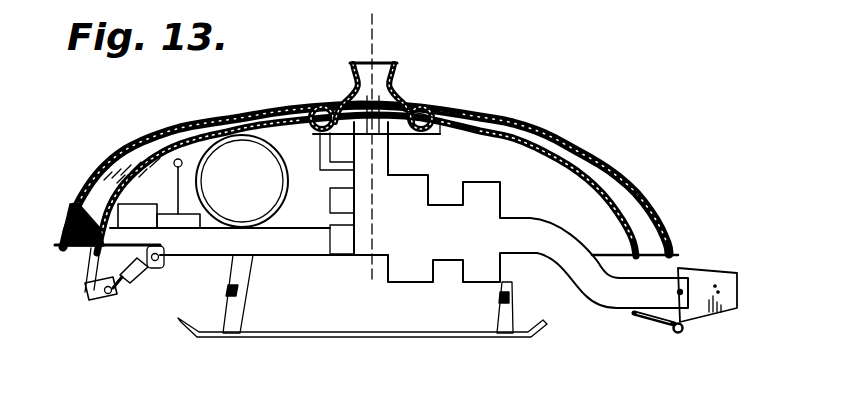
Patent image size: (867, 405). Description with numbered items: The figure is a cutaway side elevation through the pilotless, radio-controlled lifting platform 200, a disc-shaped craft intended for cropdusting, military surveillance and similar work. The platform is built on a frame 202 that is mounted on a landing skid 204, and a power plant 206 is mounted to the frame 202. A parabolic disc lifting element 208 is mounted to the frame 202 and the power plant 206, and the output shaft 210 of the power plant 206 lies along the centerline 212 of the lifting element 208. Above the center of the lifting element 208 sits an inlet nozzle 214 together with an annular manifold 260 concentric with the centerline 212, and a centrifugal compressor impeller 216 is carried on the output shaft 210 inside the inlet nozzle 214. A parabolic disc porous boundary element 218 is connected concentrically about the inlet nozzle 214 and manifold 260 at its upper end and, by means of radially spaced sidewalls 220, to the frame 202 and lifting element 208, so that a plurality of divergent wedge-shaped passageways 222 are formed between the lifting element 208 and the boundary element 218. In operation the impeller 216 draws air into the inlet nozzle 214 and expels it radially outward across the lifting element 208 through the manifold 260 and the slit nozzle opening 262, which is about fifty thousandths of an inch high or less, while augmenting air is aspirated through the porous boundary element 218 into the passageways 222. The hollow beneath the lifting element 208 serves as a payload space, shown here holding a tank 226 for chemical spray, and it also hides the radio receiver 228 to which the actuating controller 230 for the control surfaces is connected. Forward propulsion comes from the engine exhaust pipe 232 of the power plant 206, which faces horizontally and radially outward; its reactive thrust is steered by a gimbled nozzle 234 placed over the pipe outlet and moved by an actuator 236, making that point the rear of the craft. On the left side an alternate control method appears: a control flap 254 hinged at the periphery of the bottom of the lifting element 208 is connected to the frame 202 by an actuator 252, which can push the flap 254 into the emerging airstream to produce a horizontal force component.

The lifting platform 200 is at (385, 196).
The frame 202 is at (307, 240).
The landing skid 204 is at (323, 340).
The power plant 206 is at (417, 188).
The parabolic disc lifting element 208 is at (271, 111).
The output shaft 210 is at (391, 134).
The centerline 212 is at (374, 41).
The inlet nozzle 214 is at (356, 85).
The centrifugal compressor impeller 216 is at (407, 102).
The parabolic disc porous boundary element 218 is at (190, 126).
The sidewalls 220 is at (76, 213).
The divergent wedge-shaped passageways 222 is at (130, 167).
The tank 226 is at (213, 184).
The radio receiver 228 is at (182, 225).
The actuating controller 230 is at (141, 212).
The engine exhaust pipe 232 is at (592, 280).
The gimbled nozzle 234 is at (705, 281).
The actuator 236 is at (657, 325).
The actuator 252 is at (143, 290).
The control flap 254 is at (84, 272).
The annular manifold 260 is at (443, 100).
The slit nozzle opening 262 is at (466, 114).